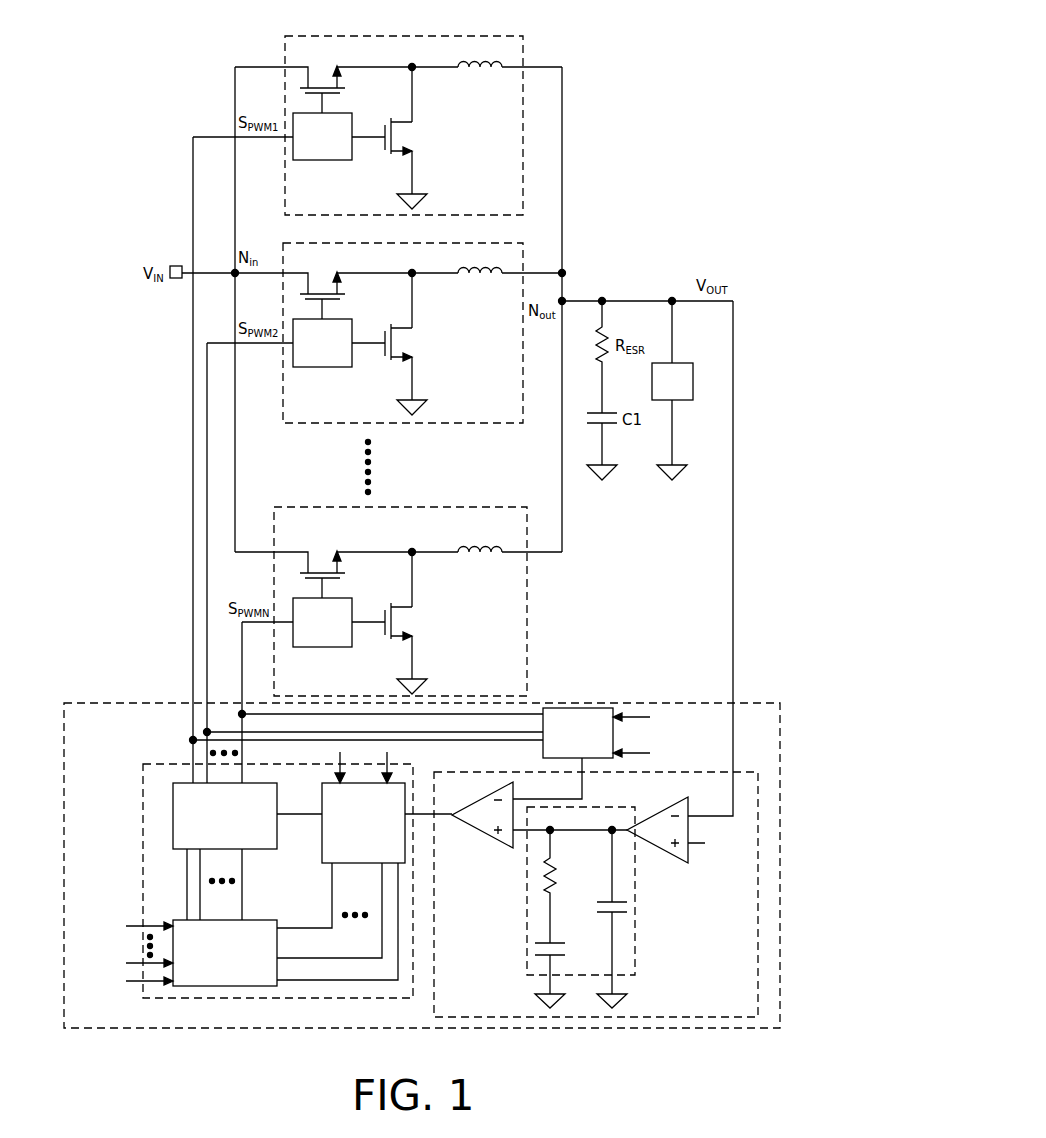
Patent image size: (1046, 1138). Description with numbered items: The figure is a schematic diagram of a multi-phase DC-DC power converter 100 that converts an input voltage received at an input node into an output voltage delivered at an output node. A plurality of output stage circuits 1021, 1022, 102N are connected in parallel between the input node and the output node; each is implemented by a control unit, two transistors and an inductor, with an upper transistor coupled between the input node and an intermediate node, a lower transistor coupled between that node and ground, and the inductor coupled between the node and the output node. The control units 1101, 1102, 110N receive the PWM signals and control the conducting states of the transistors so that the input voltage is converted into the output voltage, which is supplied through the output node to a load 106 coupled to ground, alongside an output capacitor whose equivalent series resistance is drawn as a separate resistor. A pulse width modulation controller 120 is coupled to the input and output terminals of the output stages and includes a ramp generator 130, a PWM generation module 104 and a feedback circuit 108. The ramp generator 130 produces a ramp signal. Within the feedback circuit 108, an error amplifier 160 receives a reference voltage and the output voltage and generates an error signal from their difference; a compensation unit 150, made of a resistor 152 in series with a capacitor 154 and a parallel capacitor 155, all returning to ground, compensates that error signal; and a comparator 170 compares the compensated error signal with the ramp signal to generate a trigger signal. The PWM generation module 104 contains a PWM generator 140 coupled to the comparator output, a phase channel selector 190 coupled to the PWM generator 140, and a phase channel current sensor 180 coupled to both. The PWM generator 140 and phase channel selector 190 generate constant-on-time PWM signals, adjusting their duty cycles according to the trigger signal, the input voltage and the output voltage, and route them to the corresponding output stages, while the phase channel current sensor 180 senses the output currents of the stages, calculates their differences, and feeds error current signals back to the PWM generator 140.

The multi-phase DC-DC power converter 100 is at (722, 70).
The output stage circuit 1021 is at (400, 125).
The output stage circuit 1022 is at (372, 361).
The output stage circuit 102N is at (420, 601).
The control unit 1101 is at (322, 147).
The control unit 1102 is at (322, 354).
The control unit 110N is at (322, 634).
The load 106 is at (680, 362).
The pulse width modulation controller 120 is at (110, 700).
The PWM generation module 104 is at (143, 843).
The phase channel selector 190 is at (173, 800).
The phase channel current sensor 180 is at (173, 920).
The PWM generator 140 is at (405, 785).
The ramp generator 130 is at (585, 708).
The feedback circuit 108 is at (670, 1020).
The comparator 170 is at (474, 828).
The error amplifier 160 is at (688, 858).
The compensation unit 150 is at (635, 950).
The resistor 152 is at (545, 873).
The capacitor 154 is at (545, 950).
The capacitor 155 is at (625, 908).